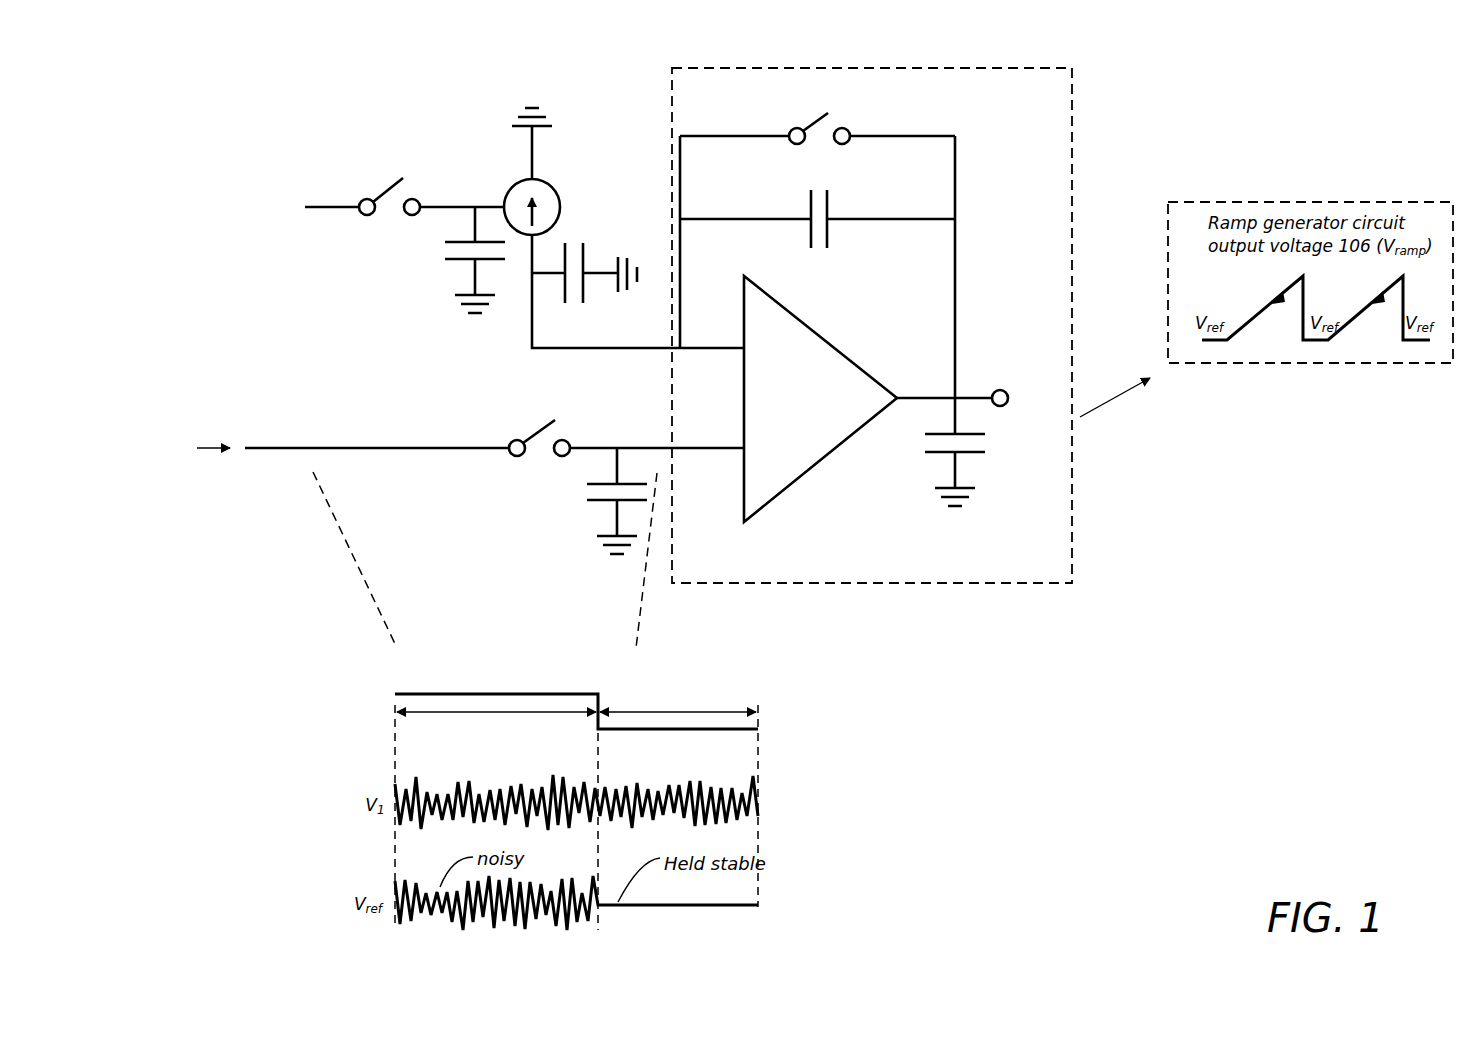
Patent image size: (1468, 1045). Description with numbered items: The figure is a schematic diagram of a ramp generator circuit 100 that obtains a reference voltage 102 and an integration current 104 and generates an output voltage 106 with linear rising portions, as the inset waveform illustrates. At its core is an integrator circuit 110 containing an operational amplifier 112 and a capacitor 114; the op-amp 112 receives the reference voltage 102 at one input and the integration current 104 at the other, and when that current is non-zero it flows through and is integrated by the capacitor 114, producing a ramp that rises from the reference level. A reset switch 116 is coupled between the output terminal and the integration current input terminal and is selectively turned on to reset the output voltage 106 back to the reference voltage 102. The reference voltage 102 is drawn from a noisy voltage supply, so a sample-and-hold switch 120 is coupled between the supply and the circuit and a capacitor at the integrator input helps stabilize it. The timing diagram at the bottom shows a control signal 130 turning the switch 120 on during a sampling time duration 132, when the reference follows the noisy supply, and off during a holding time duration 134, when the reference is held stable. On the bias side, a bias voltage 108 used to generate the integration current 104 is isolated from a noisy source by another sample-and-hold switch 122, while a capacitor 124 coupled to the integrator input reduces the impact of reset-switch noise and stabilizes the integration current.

The ramp generator circuit 100 is at (284, 82).
The reference voltage 102 is at (667, 447).
The integration current 104 is at (560, 193).
The output voltage 106 is at (1006, 404).
The bias voltage 108 is at (462, 203).
The integrator circuit 110 is at (872, 325).
The operational amplifier 112 is at (833, 348).
The capacitor 114 is at (830, 243).
The reset switch 116 is at (847, 143).
The sample-and-hold switch 120 is at (518, 457).
The sample-and-hold switch 122 is at (394, 177).
The capacitor C3 124 is at (585, 246).
The control signal 130 is at (496, 797).
The sampling time duration 132 is at (496, 725).
The holding time duration 134 is at (678, 698).